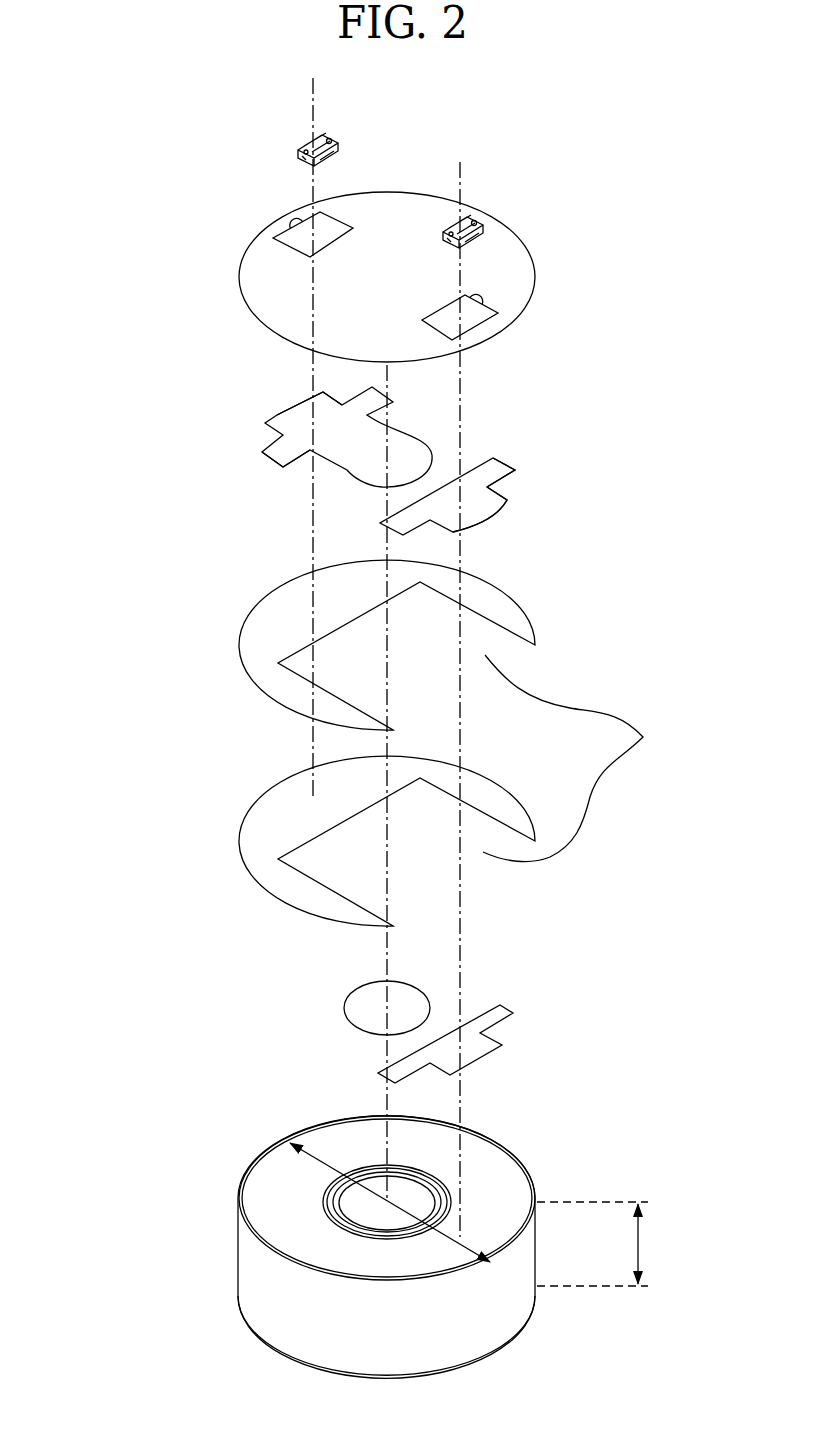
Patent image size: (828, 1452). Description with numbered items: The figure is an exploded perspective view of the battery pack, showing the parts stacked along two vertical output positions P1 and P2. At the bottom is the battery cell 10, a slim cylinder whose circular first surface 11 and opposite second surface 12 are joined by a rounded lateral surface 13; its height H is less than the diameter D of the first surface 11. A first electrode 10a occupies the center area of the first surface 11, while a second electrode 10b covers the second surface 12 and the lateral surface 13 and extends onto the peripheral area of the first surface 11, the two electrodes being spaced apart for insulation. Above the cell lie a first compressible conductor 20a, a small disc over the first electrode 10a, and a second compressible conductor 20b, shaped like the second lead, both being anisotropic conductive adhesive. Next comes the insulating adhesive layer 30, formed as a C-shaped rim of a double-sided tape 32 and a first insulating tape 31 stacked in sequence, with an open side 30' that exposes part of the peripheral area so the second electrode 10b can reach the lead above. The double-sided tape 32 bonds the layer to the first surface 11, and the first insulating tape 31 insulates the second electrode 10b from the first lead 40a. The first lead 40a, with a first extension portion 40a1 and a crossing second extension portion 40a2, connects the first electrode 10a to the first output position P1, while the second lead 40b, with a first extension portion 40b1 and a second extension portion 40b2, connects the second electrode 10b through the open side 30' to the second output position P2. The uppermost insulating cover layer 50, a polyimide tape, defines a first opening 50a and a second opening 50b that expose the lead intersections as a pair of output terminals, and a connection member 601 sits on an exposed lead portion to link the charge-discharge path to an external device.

The battery cell 10 is at (188, 1208).
The first electrode 10a is at (413, 1192).
The second electrode 10b is at (507, 1180).
The first surface 11 is at (262, 1143).
The second surface 12 is at (497, 1352).
The lateral surface 13 is at (247, 1270).
The first compressible conductor 20a is at (345, 1006).
The second compressible conductor 20b is at (497, 1010).
The insulating adhesive layer 30 is at (330, 743).
The open side 30' is at (579, 758).
The first insulating tape 31 is at (247, 643).
The double-sided tape 32 is at (253, 832).
The first lead 40a is at (176, 402).
The first extension portion 40a1 is at (277, 415).
The second extension portion 40a2 is at (266, 454).
The second lead 40b is at (612, 448).
The first extension portion 40b1 is at (505, 497).
The second extension portion 40b2 is at (508, 470).
The insulating cover layer 50 is at (503, 258).
The first opening 50a is at (296, 226).
The second opening 50b is at (472, 298).
The connection member 601 is at (472, 232).
The first output position P1 is at (314, 423).
The second output position P2 is at (459, 684).
The diameter D is at (323, 1162).
The height H is at (601, 1244).